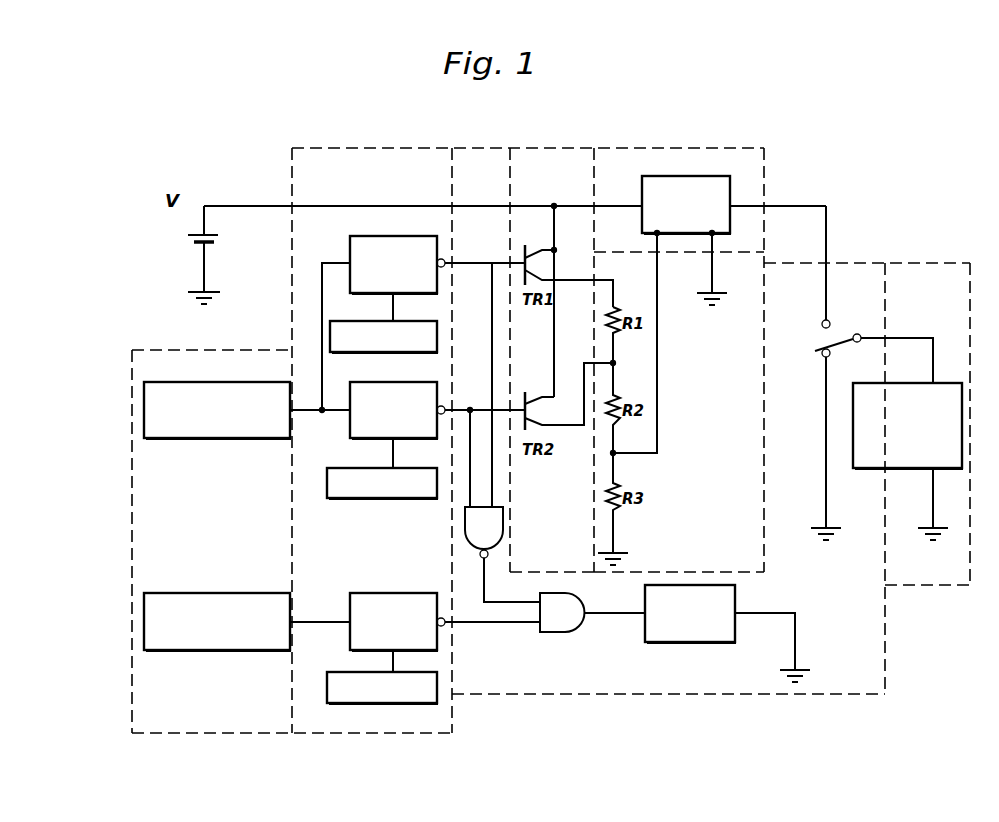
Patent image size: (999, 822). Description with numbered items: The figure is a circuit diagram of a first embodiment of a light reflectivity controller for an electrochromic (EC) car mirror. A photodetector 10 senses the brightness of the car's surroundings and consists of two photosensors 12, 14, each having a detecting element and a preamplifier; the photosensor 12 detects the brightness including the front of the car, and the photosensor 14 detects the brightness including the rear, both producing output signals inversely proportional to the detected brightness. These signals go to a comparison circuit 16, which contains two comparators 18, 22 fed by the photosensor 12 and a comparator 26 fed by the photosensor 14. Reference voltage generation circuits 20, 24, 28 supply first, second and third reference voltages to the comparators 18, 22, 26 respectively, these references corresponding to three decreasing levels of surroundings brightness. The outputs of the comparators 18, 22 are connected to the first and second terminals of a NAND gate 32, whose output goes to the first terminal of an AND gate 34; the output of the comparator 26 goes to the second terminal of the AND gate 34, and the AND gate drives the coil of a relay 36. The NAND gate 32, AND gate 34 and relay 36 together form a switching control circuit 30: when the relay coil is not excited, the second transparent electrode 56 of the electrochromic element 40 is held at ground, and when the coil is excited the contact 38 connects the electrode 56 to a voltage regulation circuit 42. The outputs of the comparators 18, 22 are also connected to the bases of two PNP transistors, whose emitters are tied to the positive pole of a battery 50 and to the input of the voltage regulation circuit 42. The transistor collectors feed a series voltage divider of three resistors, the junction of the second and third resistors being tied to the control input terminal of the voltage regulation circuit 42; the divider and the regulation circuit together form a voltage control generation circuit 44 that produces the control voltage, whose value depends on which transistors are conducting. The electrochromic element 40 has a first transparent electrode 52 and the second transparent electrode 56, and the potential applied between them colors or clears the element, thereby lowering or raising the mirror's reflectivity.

The photodetector 10 is at (233, 350).
The photosensor 12 is at (217, 439).
The photosensor 14 is at (214, 651).
The comparison circuit 16 is at (368, 148).
The comparator 18 is at (351, 254).
The reference voltage generation circuit 20 is at (352, 349).
The comparator 22 is at (360, 422).
The reference voltage generation circuit 24 is at (352, 497).
The comparator 26 is at (351, 605).
The reference voltage generation circuit 28 is at (337, 700).
The switching control circuit 30 is at (517, 688).
The NAND gate 32 is at (494, 518).
The AND gate 34 is at (560, 624).
The relay 36 is at (706, 643).
The contact 38 is at (841, 344).
The electrochromic element 40 is at (871, 462).
The voltage regulation circuit 42 is at (700, 176).
The voltage control generation circuit 44 is at (655, 148).
The battery 50 is at (193, 246).
The first transparent electrode 52 is at (957, 484).
The second transparent electrode 56 is at (959, 373).